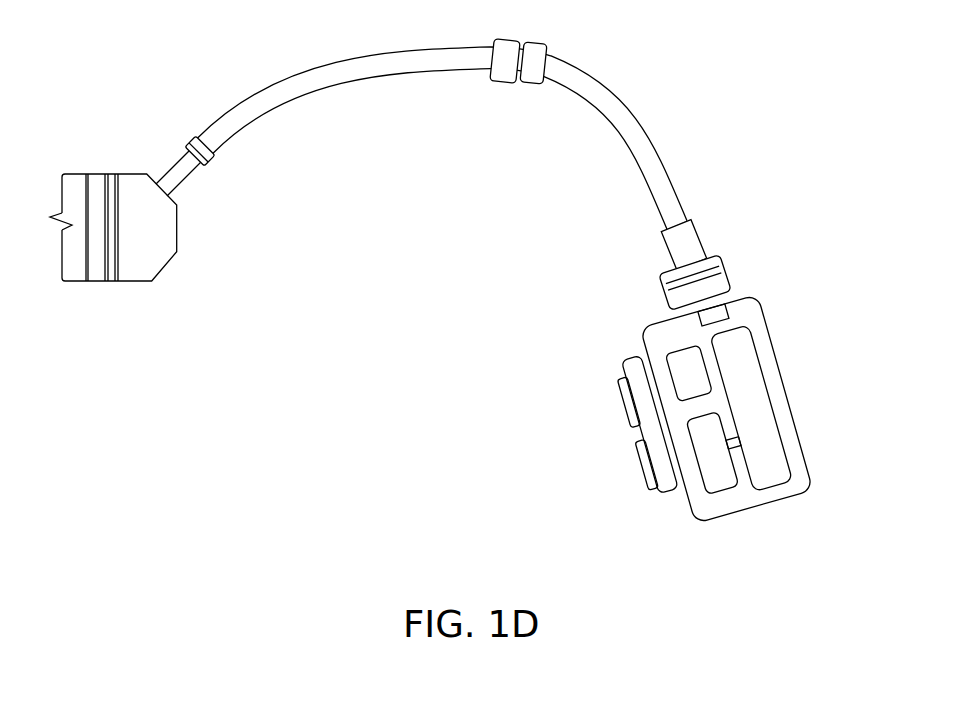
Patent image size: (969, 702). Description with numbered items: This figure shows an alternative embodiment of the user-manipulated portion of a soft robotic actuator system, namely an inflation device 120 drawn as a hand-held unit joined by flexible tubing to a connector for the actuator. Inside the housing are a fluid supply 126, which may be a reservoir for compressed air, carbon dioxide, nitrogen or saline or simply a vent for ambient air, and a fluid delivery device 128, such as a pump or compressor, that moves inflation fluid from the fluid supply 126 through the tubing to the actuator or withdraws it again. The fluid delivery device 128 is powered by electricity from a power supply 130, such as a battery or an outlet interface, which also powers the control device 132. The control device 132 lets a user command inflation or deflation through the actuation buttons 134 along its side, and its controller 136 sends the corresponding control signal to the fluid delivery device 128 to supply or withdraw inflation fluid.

The inflation device 120 is at (755, 291).
The fluid supply 126 is at (750, 380).
The fluid delivery device 128 is at (712, 490).
The power supply 130 is at (683, 360).
The control device 132 is at (666, 498).
The actuation buttons 134 is at (621, 396).
The controller 136 is at (630, 361).